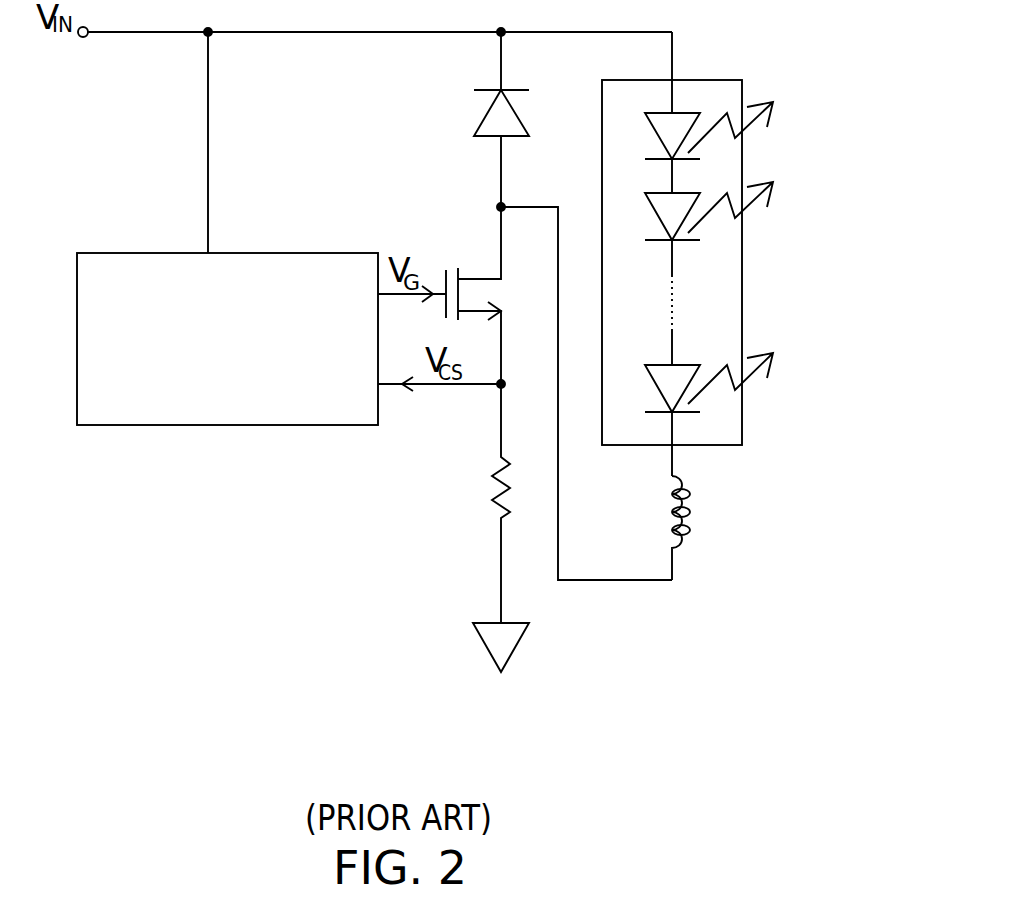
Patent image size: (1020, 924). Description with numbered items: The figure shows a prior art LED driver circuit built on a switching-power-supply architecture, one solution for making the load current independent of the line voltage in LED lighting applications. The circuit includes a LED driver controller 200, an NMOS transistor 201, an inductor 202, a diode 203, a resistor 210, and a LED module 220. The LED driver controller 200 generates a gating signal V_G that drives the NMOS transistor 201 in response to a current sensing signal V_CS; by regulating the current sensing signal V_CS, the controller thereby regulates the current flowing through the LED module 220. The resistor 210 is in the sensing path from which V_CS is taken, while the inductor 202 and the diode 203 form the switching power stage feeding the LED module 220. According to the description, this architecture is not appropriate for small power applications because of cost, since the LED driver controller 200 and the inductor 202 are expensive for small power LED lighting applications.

The LED driver controller 200 is at (172, 426).
The NMOS transistor 201 is at (492, 290).
The inductor 202 is at (693, 520).
The diode 203 is at (478, 118).
The resistor 210 is at (492, 485).
The LED module 220 is at (742, 268).